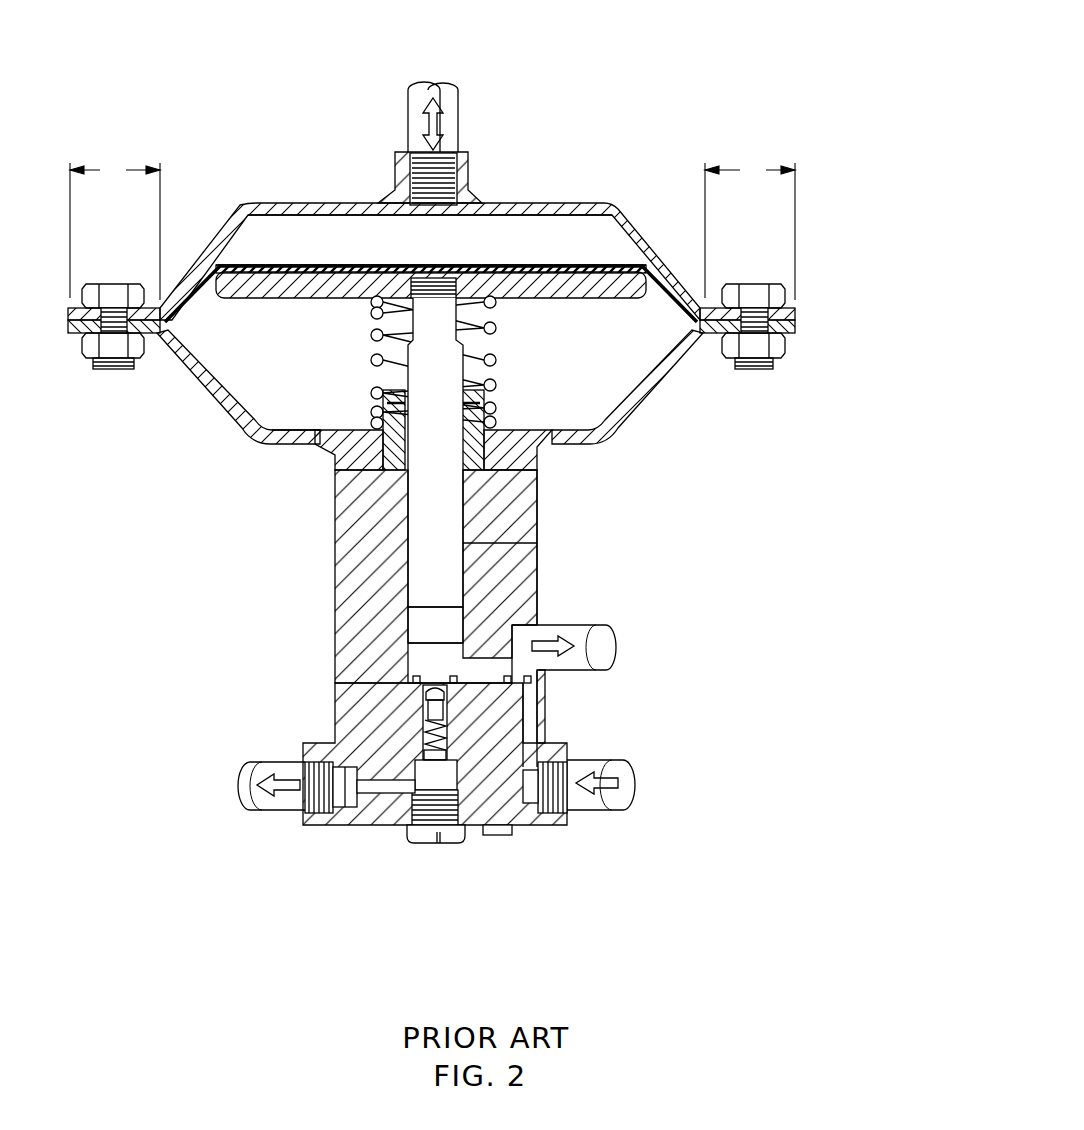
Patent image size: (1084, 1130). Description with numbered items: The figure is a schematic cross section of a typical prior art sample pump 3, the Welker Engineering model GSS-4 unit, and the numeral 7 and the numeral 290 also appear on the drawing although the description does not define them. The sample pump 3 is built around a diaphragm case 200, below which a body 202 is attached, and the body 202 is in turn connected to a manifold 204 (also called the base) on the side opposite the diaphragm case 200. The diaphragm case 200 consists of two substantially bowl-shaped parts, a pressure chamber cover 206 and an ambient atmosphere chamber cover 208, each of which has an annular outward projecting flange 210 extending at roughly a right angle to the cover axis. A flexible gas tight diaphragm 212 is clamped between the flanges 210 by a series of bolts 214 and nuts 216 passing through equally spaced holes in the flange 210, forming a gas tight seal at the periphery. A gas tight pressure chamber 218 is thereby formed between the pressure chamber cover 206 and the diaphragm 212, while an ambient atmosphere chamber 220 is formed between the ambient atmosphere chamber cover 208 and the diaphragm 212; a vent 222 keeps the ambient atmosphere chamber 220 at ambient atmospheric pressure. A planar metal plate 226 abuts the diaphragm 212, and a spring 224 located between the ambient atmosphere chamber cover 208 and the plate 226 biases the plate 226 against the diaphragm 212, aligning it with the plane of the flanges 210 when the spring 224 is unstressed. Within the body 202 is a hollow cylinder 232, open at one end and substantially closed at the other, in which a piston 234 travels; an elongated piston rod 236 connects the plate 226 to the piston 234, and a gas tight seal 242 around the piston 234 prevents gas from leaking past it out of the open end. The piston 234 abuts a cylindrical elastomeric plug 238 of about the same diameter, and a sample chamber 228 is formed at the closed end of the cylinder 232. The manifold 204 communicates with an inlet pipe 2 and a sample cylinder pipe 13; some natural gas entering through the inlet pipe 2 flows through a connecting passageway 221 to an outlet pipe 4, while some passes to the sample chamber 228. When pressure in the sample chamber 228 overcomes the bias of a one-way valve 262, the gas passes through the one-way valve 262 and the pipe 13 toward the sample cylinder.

The pressure regulating valve assembly 7 is at (187, 130).
The diaphragm case 200 is at (192, 450).
The body 202 is at (518, 572).
The manifold 204 is at (515, 824).
The pressure chamber cover 206 is at (268, 203).
The ambient atmosphere chamber cover 208 is at (687, 340).
The annular outward projecting flange 210 is at (795, 311).
The flexible gas tight diaphragm 212 is at (510, 266).
The bolts 214 is at (90, 297).
The nuts 216 is at (140, 343).
The gas tight pressure chamber 218 is at (485, 228).
The ambient atmosphere chamber 220 is at (312, 410).
The connecting passageway 221 is at (520, 707).
The vent 222 is at (597, 437).
The spring 224 is at (647, 264).
The planar metal plate 226 is at (542, 286).
The sample chamber 228 is at (433, 670).
The hollow cylinder 232 is at (463, 543).
The piston 234 is at (448, 495).
The elongated piston rod 236 is at (557, 296).
The cylindrical elastomeric plug 238 is at (428, 627).
The gas tight seal 242 is at (467, 440).
The one-way valve 262 is at (433, 728).
The lower flange 290 is at (793, 330).
The inlet pipe 2 is at (610, 806).
The sample pump 3 is at (725, 621).
The outlet pipe 4 is at (585, 643).
The sample cylinder pipe 13 is at (277, 806).